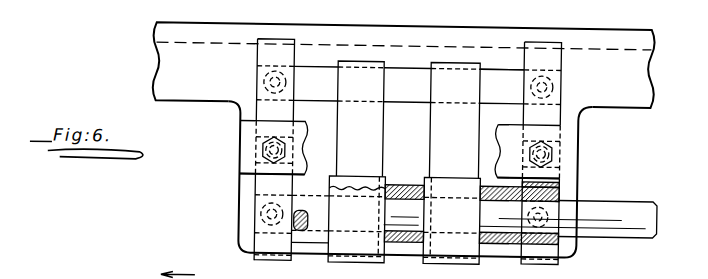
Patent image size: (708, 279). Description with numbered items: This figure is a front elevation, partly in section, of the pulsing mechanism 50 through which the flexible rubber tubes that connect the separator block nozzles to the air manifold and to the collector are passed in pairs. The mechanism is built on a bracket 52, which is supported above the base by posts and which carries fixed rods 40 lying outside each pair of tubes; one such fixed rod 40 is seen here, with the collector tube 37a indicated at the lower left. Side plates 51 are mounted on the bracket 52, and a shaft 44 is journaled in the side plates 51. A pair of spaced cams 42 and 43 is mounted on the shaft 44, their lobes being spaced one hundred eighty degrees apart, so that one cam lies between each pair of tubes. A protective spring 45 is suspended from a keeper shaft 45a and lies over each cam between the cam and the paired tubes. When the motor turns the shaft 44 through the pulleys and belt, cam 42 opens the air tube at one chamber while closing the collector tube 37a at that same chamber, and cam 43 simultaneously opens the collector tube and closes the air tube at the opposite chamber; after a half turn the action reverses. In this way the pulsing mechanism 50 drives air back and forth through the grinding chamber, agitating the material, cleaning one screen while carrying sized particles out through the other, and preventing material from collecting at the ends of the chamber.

The flexible rubber tube 37a is at (108, 278).
The fixed rod 40 is at (302, 226).
The cam 42 is at (450, 177).
The cam 43 is at (367, 217).
The shaft 44 is at (612, 207).
The protective spring 45 is at (440, 122).
The keeper shaft 45a is at (500, 76).
The pulsing mechanism 50 is at (213, 209).
The side plate 51 is at (263, 61).
The bracket 52 is at (625, 67).